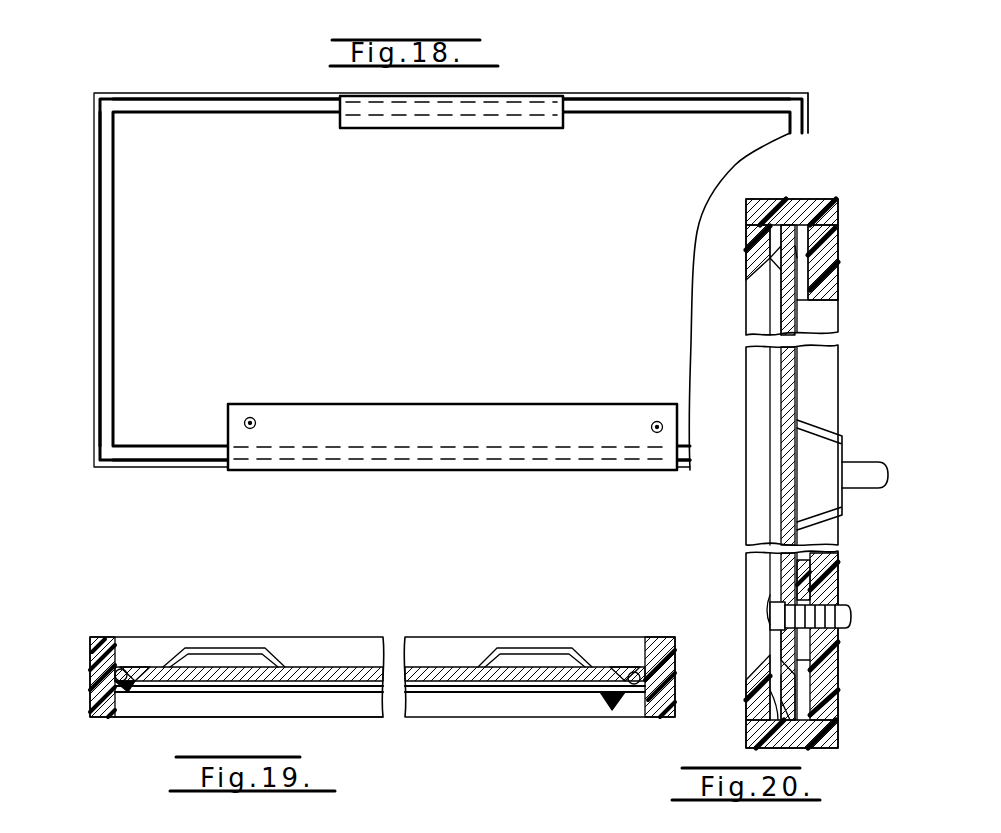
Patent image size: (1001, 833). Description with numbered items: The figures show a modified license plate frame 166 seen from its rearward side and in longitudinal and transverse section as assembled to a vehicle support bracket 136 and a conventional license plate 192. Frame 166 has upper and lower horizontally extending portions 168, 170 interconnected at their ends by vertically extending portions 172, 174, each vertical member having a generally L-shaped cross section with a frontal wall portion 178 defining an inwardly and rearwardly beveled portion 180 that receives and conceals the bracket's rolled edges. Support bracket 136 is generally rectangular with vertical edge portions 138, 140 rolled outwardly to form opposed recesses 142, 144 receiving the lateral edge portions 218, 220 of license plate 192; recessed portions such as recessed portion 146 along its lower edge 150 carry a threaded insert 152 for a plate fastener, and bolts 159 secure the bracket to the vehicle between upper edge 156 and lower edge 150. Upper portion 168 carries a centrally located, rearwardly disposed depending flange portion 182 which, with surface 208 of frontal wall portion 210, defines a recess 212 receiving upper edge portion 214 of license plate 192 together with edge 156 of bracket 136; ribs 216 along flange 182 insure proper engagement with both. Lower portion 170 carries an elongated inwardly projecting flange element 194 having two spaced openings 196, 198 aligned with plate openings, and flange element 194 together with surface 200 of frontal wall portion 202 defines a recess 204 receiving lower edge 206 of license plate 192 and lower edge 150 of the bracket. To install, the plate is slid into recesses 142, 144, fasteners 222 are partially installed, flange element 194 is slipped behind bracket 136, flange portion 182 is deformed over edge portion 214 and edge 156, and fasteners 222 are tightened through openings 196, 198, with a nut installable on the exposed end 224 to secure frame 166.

In FIG. 19, the support bracket 136 is at (180, 658).
In FIG. 20, the support bracket 136 is at (798, 332).
In FIG. 19, the vertically extending edge portion 138 is at (116, 678).
In FIG. 19, the vertically extending edge portion 140 is at (630, 700).
In FIG. 19, the recess 142 is at (128, 672).
In FIG. 19, the recess 144 is at (650, 640).
In FIG. 20, the recessed portion 146 is at (800, 694).
In FIG. 20, the lower edge 150 is at (840, 738).
In FIG. 20, the threaded insert 152 is at (810, 668).
In FIG. 20, the upper edge 156 is at (838, 230).
In FIG. 20, the bolt 159 is at (862, 470).
In FIG. 18, the frame assembly 166 is at (779, 89).
In FIG. 19, the frame assembly 166 is at (117, 730).
In FIG. 18, the upper horizontally extending portion 168 is at (216, 93).
In FIG. 18, the lower horizontally extending portion 170 is at (152, 467).
In FIG. 18, the vertically extending portion 172 is at (94, 272).
In FIG. 19, the vertically extending portion 172 is at (90, 645).
In FIG. 20, the vertically extending portion 172 is at (760, 378).
In FIG. 18, the vertically extending portion 174 is at (806, 122).
In FIG. 19, the vertically extending portion 174 is at (662, 692).
In FIG. 20, the vertically extending portion 174 is at (746, 690).
In FIG. 19, the frontal wall portion 178 is at (142, 718).
In FIG. 19, the beveled portion 180 is at (160, 716).
In FIG. 18, the depending flange portion 182 is at (545, 128).
In FIG. 20, the depending flange portion 182 is at (830, 260).
In FIG. 19, the license plate 192 is at (307, 682).
In FIG. 20, the license plate 192 is at (786, 388).
In FIG. 18, the flange element 194 is at (415, 404).
In FIG. 20, the flange element 194 is at (826, 644).
In FIG. 18, the opening 196 is at (252, 422).
In FIG. 20, the opening 196 is at (851, 614).
In FIG. 18, the opening 198 is at (655, 425).
In FIG. 20, the surface 200 is at (780, 712).
In FIG. 20, the frontal wall portion 202 is at (760, 694).
In FIG. 20, the recess 204 is at (800, 708).
In FIG. 20, the edge 206 is at (772, 730).
In FIG. 20, the surface 208 is at (782, 262).
In FIG. 20, the frontal wall portion 210 is at (776, 262).
In FIG. 20, the recess 212 is at (777, 230).
In FIG. 20, the edge portion 214 is at (772, 248).
In FIG. 20, the rib 216 is at (826, 288).
In FIG. 19, the edge portion 218 is at (118, 700).
In FIG. 19, the edge portion 220 is at (608, 706).
In FIG. 20, the fastener 222 is at (774, 606).
In FIG. 20, the exposed end 224 is at (848, 610).